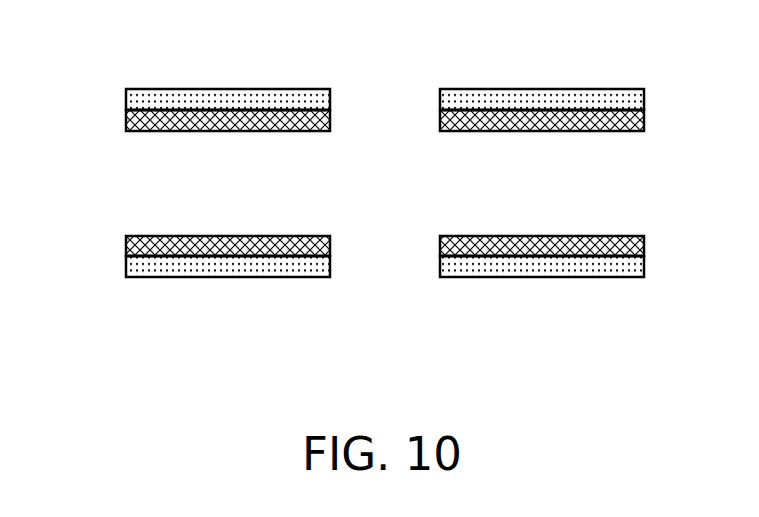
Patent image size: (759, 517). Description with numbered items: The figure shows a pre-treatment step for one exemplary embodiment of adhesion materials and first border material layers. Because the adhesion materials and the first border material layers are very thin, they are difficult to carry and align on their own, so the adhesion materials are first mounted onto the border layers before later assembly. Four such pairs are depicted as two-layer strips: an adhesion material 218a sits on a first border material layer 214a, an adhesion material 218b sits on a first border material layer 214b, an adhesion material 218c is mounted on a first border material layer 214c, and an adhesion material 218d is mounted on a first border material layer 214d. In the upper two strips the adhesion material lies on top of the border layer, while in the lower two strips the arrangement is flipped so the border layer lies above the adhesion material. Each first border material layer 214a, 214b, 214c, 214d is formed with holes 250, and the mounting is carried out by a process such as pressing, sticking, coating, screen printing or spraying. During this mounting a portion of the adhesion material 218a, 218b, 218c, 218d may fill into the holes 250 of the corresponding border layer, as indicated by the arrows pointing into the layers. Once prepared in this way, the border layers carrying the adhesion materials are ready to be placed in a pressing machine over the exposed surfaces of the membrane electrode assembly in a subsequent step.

The adhesion material 218a is at (127, 101).
The first border material layer 214a is at (127, 122).
The adhesion material 218b is at (644, 101).
The first border material layer 214b is at (644, 122).
The first border material layer 214c is at (127, 245).
The adhesion material 218c is at (127, 267).
The first border material layer 214d is at (644, 246).
The adhesion material 218d is at (644, 268).
The holes 250 is at (230, 118).